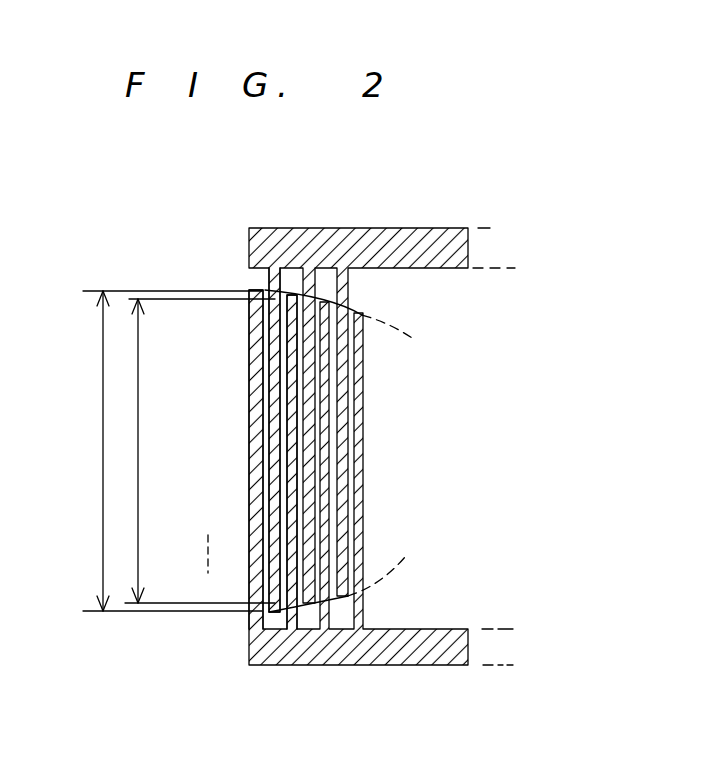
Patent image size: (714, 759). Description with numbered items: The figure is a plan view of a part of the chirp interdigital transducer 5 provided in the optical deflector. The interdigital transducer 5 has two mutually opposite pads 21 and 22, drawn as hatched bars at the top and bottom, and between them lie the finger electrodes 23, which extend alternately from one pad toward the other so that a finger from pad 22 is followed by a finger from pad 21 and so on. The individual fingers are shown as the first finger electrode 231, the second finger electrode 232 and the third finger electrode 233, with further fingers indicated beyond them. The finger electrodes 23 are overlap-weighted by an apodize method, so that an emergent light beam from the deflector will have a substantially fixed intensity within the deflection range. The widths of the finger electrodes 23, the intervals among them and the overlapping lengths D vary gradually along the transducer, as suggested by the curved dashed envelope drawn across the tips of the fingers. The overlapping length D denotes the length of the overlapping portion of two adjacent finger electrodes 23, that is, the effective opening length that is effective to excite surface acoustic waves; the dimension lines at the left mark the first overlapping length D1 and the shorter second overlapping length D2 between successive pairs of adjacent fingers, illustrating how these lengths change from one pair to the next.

The interdigital transducer 5 is at (250, 218).
The pad 21 is at (383, 228).
The pad 22 is at (332, 665).
The finger electrodes 23 is at (204, 412).
The finger electrode 231 is at (250, 411).
The finger electrode 232 is at (270, 445).
The finger electrode 233 is at (288, 482).
The overlapping length D is at (66, 445).
The overlapping length D1 is at (86, 451).
The overlapping length D2 is at (175, 465).